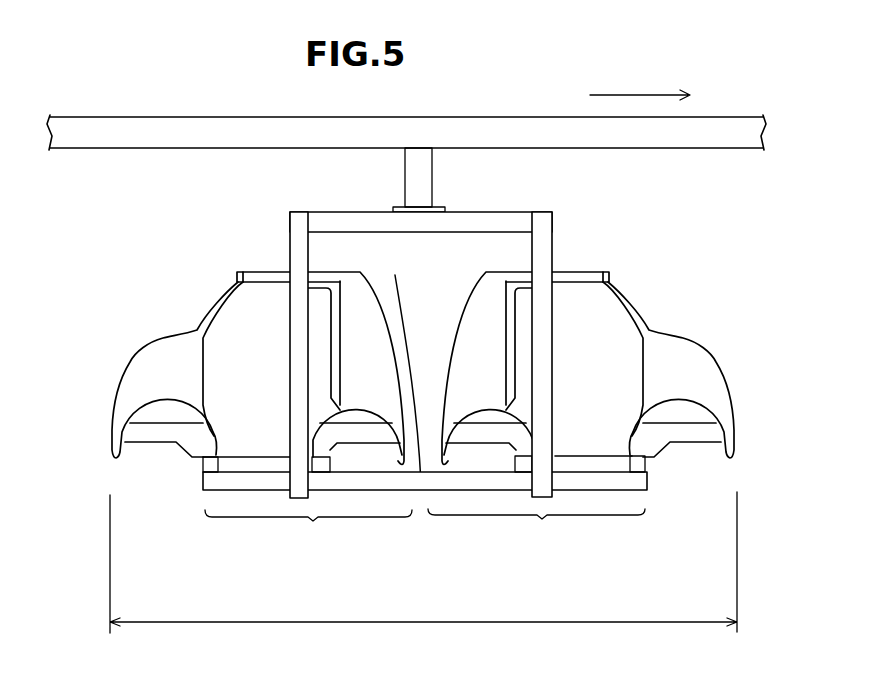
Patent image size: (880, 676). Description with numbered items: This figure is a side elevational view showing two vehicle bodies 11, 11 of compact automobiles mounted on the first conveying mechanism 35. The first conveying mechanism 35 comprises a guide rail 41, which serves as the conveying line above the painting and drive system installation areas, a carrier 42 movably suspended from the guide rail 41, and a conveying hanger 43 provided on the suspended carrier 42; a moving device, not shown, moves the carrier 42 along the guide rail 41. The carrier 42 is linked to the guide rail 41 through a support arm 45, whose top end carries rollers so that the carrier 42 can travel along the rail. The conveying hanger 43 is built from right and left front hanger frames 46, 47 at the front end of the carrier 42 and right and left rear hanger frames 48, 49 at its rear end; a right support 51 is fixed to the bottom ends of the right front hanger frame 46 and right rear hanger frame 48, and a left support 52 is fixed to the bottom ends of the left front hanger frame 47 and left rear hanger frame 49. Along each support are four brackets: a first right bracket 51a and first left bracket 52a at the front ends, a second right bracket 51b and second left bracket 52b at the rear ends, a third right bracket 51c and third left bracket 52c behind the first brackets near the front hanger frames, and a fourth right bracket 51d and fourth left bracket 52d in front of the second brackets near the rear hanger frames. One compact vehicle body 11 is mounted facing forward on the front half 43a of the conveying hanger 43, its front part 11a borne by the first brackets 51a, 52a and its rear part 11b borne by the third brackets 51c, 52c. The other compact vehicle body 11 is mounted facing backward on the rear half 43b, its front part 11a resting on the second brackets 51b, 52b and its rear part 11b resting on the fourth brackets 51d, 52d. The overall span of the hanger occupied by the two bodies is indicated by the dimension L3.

The vehicle body 11 is at (133, 372).
The front part 11a is at (200, 450).
The rear part 11b is at (338, 446).
The first conveying mechanism 35 is at (561, 114).
The guide rail 41 is at (223, 122).
The carrier 42 is at (341, 218).
The conveying hanger 43 is at (418, 380).
The front half 43a is at (536, 530).
The rear half 43b is at (308, 531).
The support arm 45 is at (417, 167).
The right front hanger frame 46 is at (632, 354).
The left front hanger frame 47 is at (545, 315).
The right rear hanger frame 48 is at (206, 355).
The left rear hanger frame 49 is at (295, 320).
The right support 51 is at (411, 368).
The left support 52 is at (408, 379).
The first right bracket 51a is at (667, 522).
The first left bracket 52a is at (633, 473).
The second right bracket 51b is at (179, 521).
The second left bracket 52b is at (203, 470).
The third right bracket 51c is at (529, 527).
The third left bracket 52c is at (525, 472).
The fourth right bracket 51d is at (291, 530).
The fourth left bracket 52d is at (308, 472).
The hanger length dimension L3 is at (423, 573).